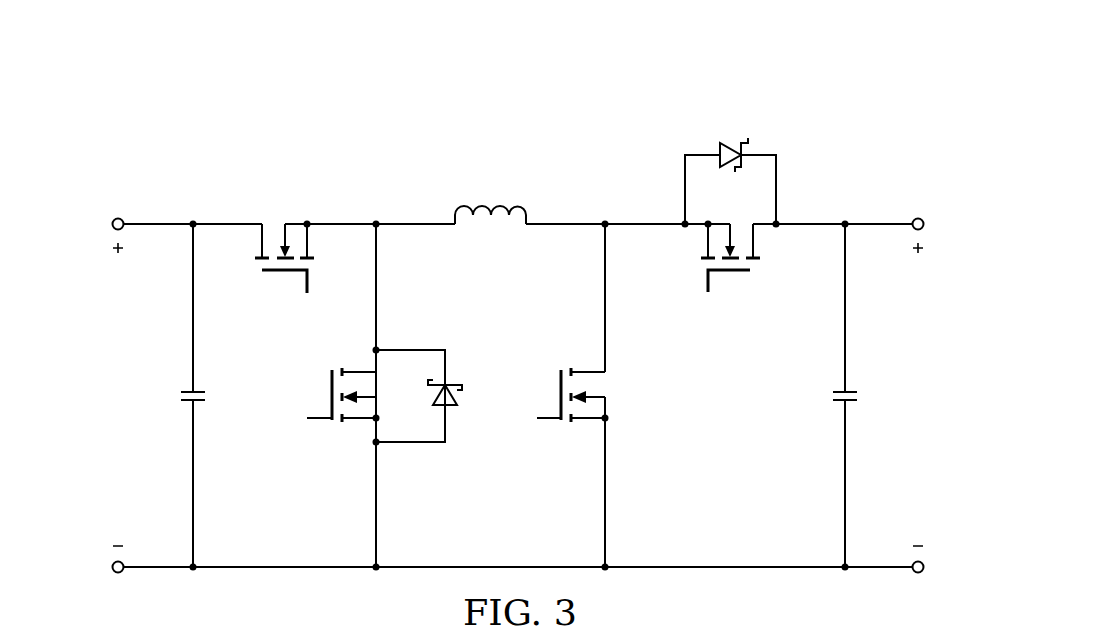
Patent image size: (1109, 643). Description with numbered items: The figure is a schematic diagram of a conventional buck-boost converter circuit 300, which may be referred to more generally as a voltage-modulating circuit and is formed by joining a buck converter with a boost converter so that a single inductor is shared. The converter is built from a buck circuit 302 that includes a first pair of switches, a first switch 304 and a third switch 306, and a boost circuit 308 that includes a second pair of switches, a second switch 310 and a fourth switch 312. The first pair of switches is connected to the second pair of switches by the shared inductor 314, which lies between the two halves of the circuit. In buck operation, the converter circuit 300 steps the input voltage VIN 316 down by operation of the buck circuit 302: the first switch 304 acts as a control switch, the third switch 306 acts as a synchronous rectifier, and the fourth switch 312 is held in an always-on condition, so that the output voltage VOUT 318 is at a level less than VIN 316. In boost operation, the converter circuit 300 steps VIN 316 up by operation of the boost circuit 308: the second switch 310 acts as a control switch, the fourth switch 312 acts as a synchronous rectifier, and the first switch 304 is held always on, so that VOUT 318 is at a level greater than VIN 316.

The buck-boost converter circuit 300 is at (306, 97).
The buck circuit 302 is at (194, 195).
The switch S1 304 is at (277, 272).
The switch S3 306 is at (323, 385).
The boost circuit 308 is at (620, 193).
The switch S2 310 is at (553, 385).
The switch S4 312 is at (747, 273).
The shared inductor 314 is at (462, 208).
The VIN 316 is at (121, 410).
The VOUT 318 is at (925, 410).